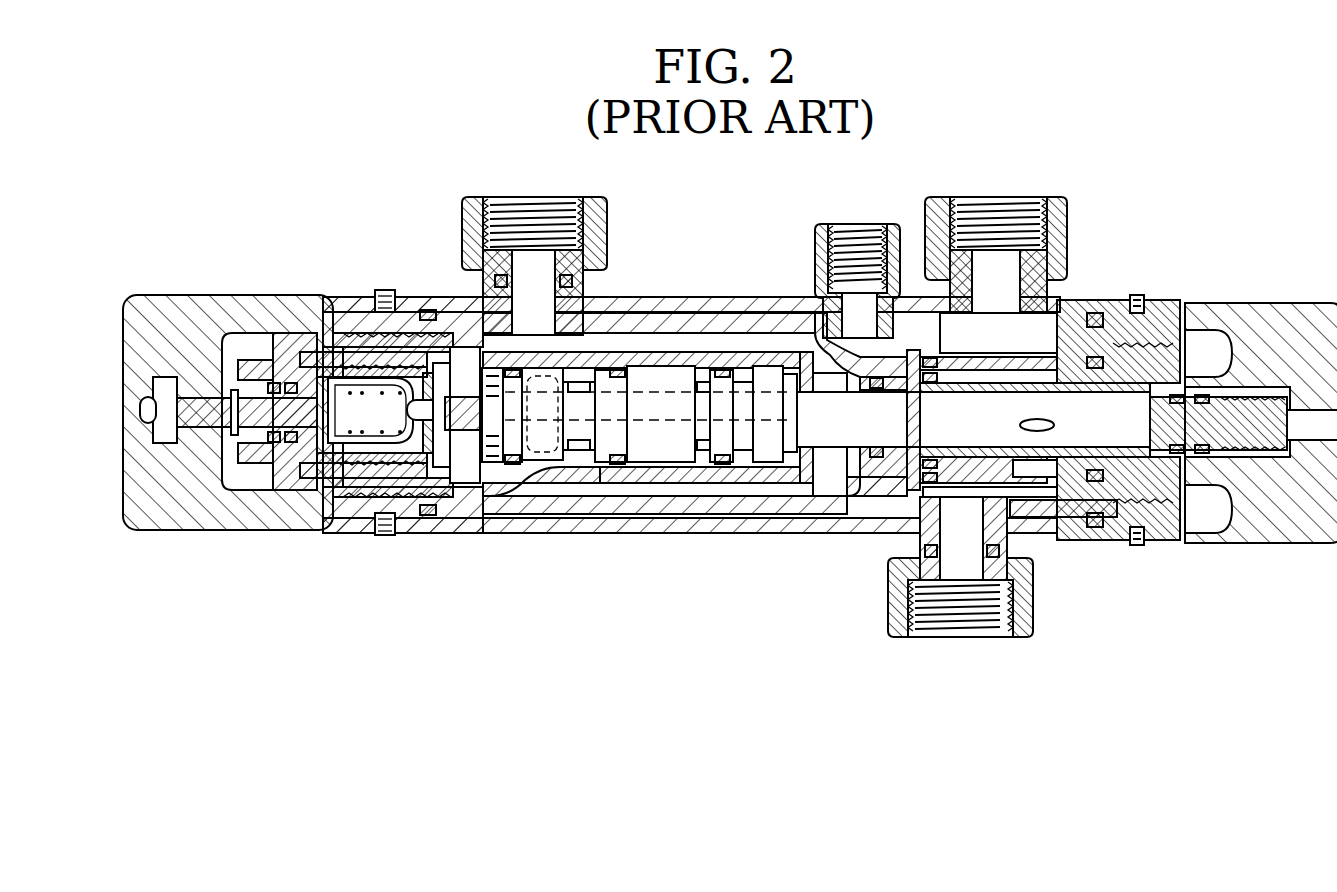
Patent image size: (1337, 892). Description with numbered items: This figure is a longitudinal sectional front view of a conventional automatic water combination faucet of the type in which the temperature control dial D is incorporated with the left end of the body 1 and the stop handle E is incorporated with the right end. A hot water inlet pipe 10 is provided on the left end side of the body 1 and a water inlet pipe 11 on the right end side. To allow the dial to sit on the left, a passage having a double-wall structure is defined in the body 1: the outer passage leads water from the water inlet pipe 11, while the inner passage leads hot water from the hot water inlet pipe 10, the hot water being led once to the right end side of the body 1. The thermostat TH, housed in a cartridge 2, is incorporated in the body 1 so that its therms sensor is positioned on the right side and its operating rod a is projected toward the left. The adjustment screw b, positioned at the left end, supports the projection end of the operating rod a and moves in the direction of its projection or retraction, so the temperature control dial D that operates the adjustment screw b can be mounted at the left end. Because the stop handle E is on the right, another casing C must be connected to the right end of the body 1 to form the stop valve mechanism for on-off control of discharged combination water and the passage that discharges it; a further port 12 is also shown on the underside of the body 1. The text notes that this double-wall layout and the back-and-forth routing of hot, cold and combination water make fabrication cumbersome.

The body 1 is at (742, 290).
The cartridge 2 is at (660, 366).
The hot water inlet pipe 10 is at (580, 290).
The water inlet pipe 11 is at (1043, 303).
The port 12 is at (903, 547).
The temperature control dial D is at (180, 330).
The stop handle E is at (1287, 303).
The casing C is at (1118, 512).
The operating rod a is at (438, 410).
The adjustment screw b is at (365, 467).
The thermostat TH is at (507, 427).